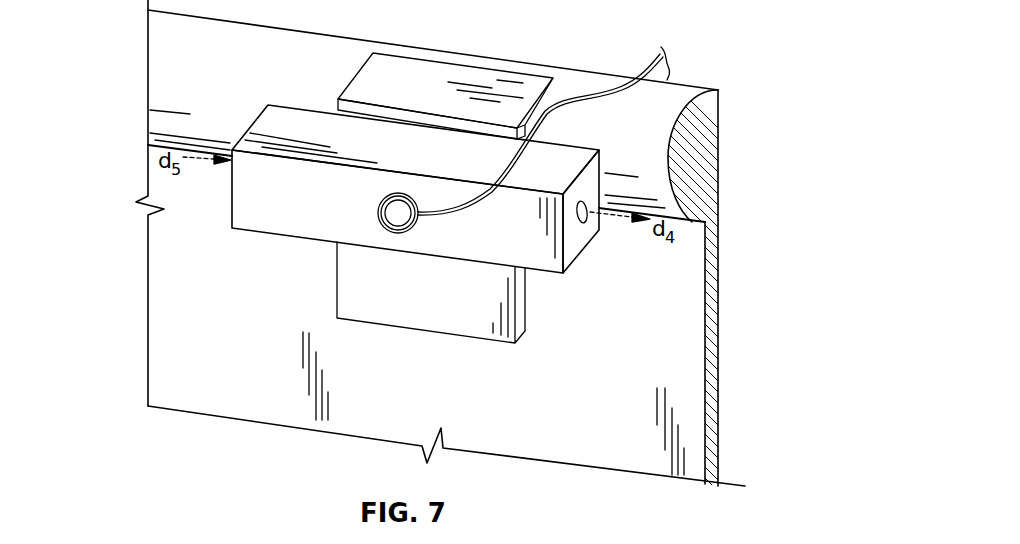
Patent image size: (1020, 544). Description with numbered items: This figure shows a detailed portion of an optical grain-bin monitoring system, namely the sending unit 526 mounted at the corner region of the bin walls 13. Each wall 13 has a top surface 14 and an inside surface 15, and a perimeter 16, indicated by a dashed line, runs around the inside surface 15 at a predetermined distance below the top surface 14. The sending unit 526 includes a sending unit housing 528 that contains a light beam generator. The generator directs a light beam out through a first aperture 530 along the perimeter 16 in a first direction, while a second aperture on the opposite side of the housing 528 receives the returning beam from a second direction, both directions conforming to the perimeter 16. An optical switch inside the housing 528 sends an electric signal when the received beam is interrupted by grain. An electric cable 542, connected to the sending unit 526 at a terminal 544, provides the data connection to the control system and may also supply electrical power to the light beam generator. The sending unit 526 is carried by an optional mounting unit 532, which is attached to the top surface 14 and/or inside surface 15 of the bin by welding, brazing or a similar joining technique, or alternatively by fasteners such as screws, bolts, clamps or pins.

The walls 13 is at (720, 272).
The top surface 14 is at (583, 70).
The inside surface 15 is at (678, 324).
The perimeter 16 is at (600, 212).
The sending unit 526 is at (403, 198).
The sending unit housing 528 is at (263, 110).
The first aperture 530 is at (587, 220).
The mounting unit 532 is at (336, 281).
The electric cable 542 is at (577, 101).
The terminal 544 is at (397, 215).